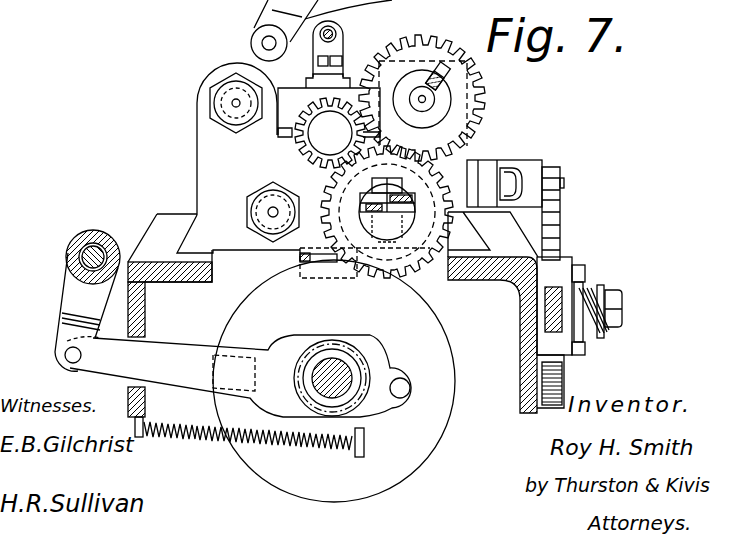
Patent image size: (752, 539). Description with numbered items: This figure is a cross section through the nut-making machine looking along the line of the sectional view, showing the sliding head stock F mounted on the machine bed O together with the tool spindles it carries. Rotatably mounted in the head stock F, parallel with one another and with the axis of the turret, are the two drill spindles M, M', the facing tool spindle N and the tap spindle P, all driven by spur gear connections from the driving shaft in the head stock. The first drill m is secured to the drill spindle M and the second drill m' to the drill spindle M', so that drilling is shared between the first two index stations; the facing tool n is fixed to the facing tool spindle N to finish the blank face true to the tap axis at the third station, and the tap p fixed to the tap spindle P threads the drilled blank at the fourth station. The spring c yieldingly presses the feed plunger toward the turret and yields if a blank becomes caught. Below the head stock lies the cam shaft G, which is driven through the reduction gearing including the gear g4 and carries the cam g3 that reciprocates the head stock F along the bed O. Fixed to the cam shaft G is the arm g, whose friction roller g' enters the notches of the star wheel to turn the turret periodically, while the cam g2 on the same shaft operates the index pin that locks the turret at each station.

The friction roller g' is at (309, 30).
The spring c is at (345, 31).
The sliding head stock F is at (197, 172).
The drill spindle M is at (233, 118).
The drill m is at (204, 99).
The drill spindle M' is at (260, 211).
The drill m' is at (280, 196).
The machine bed O is at (157, 214).
The tap spindle P is at (422, 98).
The tap p is at (437, 98).
The facing tool spindle N is at (400, 238).
The facing tool n is at (415, 204).
The cam shaft G is at (350, 362).
The arm g is at (240, 364).
The cam g2 is at (258, 371).
The cam g3 is at (64, 300).
The gear g4 is at (185, 428).